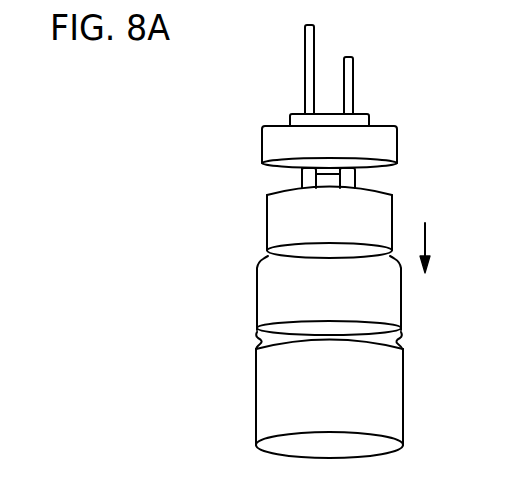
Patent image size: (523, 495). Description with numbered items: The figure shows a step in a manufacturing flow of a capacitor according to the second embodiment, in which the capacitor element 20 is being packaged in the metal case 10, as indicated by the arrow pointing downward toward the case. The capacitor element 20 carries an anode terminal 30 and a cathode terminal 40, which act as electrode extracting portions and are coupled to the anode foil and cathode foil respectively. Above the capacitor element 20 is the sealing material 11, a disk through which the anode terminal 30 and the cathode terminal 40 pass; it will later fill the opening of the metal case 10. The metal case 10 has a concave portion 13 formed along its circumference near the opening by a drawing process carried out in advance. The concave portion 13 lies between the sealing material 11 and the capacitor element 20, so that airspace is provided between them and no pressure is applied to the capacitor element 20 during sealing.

The metal case 10 is at (323, 357).
The sealing material 11 is at (397, 143).
The concave portion 13 is at (256, 340).
The capacitor element 20 is at (392, 210).
The anode terminal 30 is at (315, 50).
The cathode terminal 40 is at (355, 75).